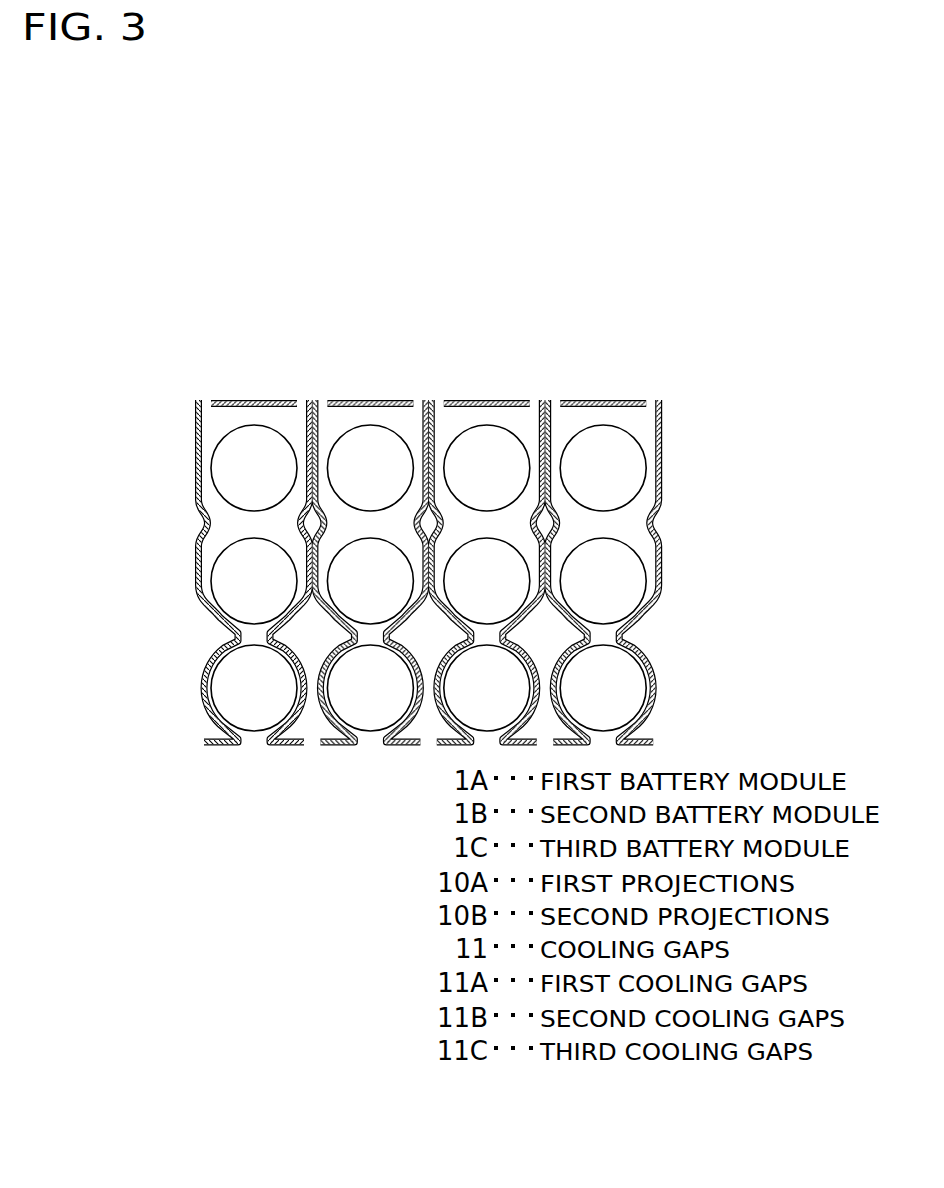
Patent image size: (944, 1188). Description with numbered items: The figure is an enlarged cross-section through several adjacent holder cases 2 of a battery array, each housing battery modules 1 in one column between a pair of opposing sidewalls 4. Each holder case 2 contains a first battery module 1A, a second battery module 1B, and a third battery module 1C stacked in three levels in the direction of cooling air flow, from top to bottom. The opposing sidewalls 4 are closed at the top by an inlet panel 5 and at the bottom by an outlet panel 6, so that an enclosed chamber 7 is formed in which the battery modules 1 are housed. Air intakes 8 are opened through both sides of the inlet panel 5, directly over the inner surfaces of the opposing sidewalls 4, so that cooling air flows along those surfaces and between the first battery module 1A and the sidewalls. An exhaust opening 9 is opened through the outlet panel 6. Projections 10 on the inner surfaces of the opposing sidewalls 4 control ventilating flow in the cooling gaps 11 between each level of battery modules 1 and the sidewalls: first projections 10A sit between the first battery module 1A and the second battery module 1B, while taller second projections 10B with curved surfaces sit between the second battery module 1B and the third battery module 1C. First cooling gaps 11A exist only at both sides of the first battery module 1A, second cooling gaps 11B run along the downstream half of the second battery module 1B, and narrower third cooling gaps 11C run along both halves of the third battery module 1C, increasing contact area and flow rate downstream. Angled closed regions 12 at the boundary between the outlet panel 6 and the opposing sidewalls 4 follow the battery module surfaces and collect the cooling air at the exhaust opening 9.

The battery modules 1 is at (687, 324).
The first battery module 1A is at (278, 473).
The second battery module 1B is at (285, 573).
The third battery module 1C is at (283, 678).
The holder case 2 is at (222, 327).
The opposing sidewalls 4 is at (198, 460).
The inlet panel 5 is at (262, 402).
The outlet panel 6 is at (207, 747).
The enclosed chamber 7 is at (212, 433).
The air intakes 8 is at (205, 398).
The exhaust opening 9 is at (250, 753).
The projections 10 is at (373, 804).
The first projections 10A is at (266, 640).
The second projections 10B is at (210, 523).
The cooling gaps 11 is at (83, 497).
The first cooling gaps 11A is at (210, 488).
The second cooling gaps 11B is at (207, 604).
The third cooling gaps 11C is at (202, 672).
The angled closed regions 12 is at (208, 723).